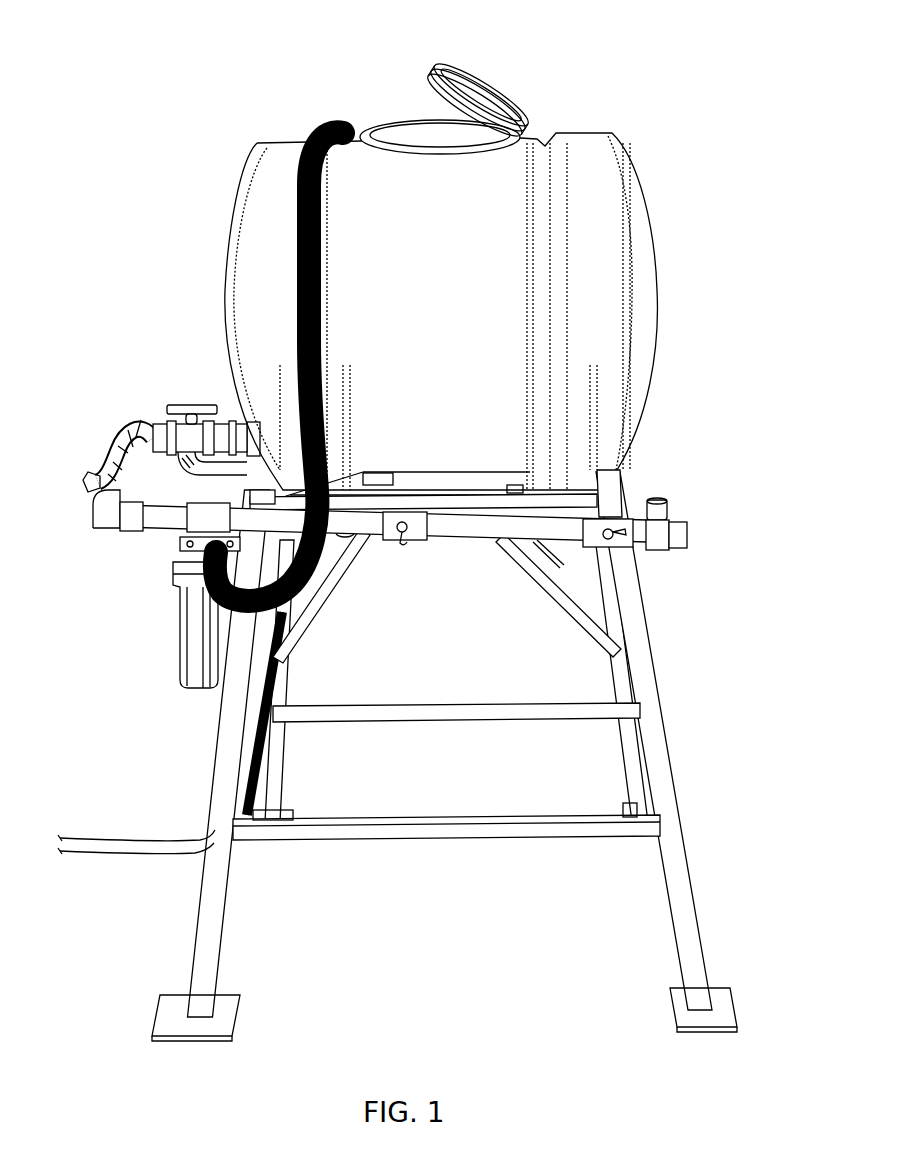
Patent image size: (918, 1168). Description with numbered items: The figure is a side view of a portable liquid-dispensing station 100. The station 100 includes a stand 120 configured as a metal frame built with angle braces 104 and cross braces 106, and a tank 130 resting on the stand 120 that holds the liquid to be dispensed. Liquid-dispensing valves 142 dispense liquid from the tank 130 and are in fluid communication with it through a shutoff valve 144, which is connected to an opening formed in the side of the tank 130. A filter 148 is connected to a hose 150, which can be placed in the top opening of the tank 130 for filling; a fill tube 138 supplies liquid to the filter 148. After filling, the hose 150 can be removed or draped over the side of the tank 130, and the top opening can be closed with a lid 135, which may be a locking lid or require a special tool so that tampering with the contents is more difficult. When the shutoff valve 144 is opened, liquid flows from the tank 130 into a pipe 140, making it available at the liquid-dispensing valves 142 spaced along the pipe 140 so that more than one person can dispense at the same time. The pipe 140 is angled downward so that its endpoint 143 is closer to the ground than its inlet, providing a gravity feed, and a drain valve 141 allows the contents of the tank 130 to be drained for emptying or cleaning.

The station 100 is at (137, 34).
The angle braces 104 is at (310, 597).
The cross braces 106 is at (470, 718).
The stand 120 is at (640, 610).
The tank 130 is at (610, 133).
The lid 135 is at (473, 82).
The fill tube 138 is at (103, 850).
The pipe 140 is at (158, 530).
The drain valve 141 is at (660, 500).
The liquid-dispensing valves 142 is at (90, 474).
The endpoint 143 is at (690, 530).
The shutoff valve 144 is at (190, 405).
The filter 148 is at (180, 635).
The hose 150 is at (330, 125).